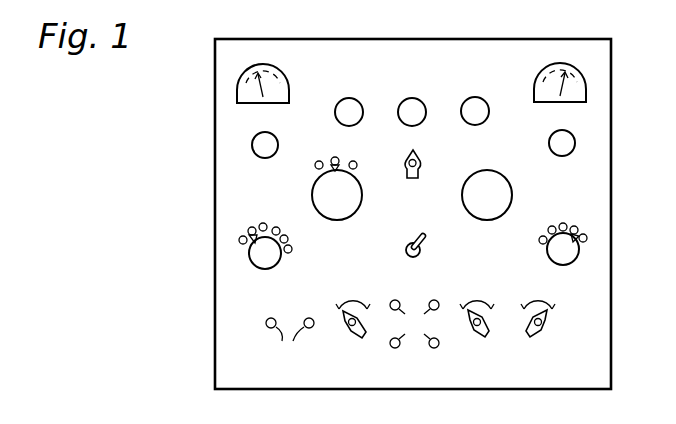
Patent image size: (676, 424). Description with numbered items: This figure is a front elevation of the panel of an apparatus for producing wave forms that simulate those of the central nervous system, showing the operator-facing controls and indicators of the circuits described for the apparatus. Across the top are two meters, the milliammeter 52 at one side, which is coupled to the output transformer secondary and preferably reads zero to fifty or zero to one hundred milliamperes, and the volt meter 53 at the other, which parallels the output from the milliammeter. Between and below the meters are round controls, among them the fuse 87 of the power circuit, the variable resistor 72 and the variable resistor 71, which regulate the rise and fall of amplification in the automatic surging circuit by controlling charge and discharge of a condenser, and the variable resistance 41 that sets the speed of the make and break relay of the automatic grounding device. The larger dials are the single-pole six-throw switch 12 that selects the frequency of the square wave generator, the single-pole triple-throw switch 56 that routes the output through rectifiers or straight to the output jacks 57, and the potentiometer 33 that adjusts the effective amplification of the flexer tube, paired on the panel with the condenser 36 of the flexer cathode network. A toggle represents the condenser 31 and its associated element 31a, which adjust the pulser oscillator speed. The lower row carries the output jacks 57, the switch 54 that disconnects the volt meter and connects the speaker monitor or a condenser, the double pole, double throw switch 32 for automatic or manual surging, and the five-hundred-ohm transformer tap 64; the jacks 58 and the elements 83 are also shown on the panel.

The single-pole six-throw switch 12 is at (265, 246).
The condenser 31 is at (409, 257).
The toggle switch lever 31a is at (409, 257).
The double pole, double throw switch 32 is at (542, 325).
The potentiometer 33 is at (487, 195).
The condenser 36 is at (477, 331).
The variable resistance 41 is at (423, 158).
The milliammeter 52 is at (271, 78).
The volt meter 53 is at (566, 73).
The switch 54 is at (353, 331).
The single-pole triple-throw switch 56 is at (337, 188).
The output jacks 57 is at (414, 324).
The jack terminals 58 is at (290, 340).
The transformer secondary tap 64 is at (563, 244).
The variable resistor 71 is at (573, 136).
The variable resistor 72 is at (277, 140).
The push button 83 is at (418, 99).
The fuse 87 is at (417, 99).